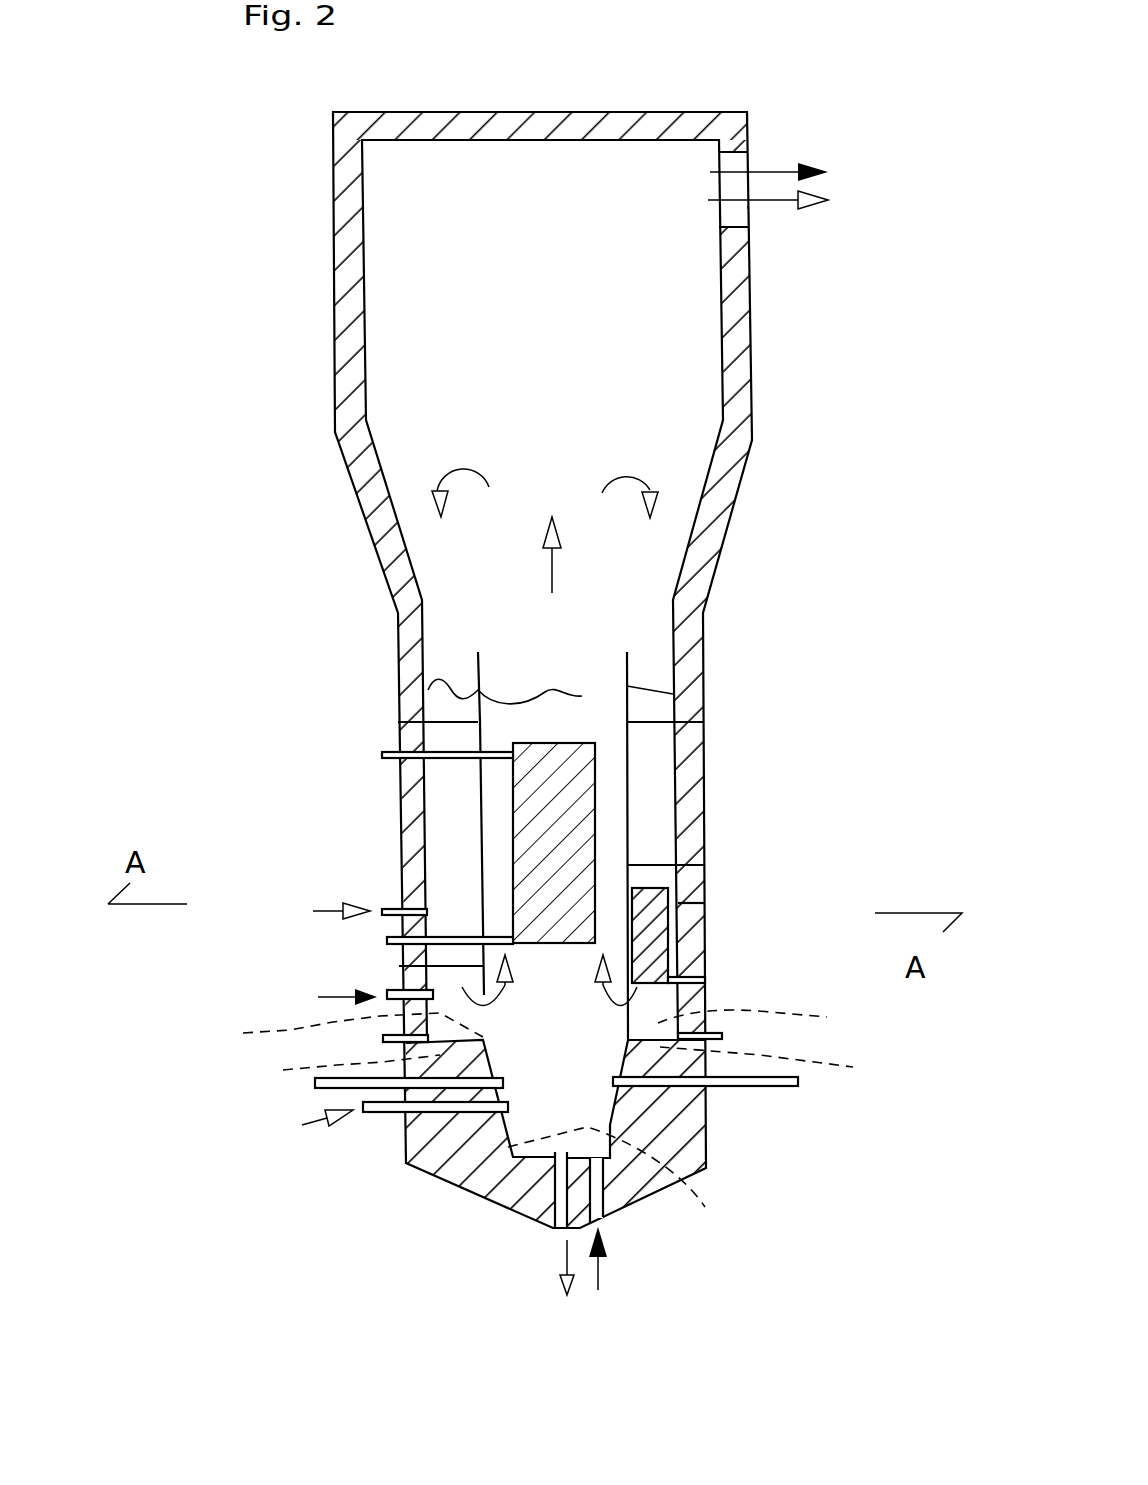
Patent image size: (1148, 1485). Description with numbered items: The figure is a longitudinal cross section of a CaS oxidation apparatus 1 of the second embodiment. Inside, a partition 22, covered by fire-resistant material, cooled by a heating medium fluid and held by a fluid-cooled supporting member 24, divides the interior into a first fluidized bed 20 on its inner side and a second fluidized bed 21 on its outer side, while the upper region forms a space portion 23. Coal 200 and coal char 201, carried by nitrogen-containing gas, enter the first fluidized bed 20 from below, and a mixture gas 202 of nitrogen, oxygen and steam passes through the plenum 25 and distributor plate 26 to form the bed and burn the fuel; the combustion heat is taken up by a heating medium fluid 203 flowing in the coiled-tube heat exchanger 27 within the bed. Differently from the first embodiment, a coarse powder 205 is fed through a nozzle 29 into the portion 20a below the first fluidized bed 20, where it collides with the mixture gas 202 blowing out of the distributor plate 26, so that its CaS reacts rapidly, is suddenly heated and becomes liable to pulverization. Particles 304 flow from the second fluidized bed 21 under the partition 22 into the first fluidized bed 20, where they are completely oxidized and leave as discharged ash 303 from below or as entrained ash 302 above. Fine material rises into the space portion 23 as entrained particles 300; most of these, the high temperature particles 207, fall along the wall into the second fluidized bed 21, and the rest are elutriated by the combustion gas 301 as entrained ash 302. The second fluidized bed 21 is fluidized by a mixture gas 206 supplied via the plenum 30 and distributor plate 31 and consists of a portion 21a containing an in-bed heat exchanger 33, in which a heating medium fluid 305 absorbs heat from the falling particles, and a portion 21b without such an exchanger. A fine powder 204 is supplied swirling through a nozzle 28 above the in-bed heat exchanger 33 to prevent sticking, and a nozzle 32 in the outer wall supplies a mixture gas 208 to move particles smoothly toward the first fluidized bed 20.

The CaS oxidation apparatus 1 is at (333, 168).
The space portion 23 is at (393, 268).
The first fluidized bed 20 is at (552, 710).
The portion below the first fluidized bed 20a is at (556, 1099).
The second fluidized bed 21 is at (440, 677).
The portion of the second fluidized bed having the in-bed heat exchanger 21a is at (658, 875).
The portion of the second fluidized bed without heat exchanger 21b is at (445, 798).
The partition 22 is at (480, 823).
The supporting member 24 is at (703, 688).
The plenum 25 is at (487, 1167).
The distributor plate 26 is at (614, 1187).
The heat exchanger 27 is at (577, 817).
The nozzle 28 is at (393, 905).
The nozzle 29 is at (380, 1113).
The plenum 30 is at (565, 1062).
The distributor plate 31 is at (534, 1025).
The nozzle 32 is at (393, 988).
The in-bed heat exchanger 33 is at (655, 938).
The coal 200 is at (278, 1091).
The coal char 201 is at (838, 1082).
The mixture gas 202 is at (619, 1234).
The heating medium fluid 203 is at (367, 762).
The fine powder 204 is at (311, 913).
The coarse powder 205 is at (295, 1133).
The mixture gas 206 is at (366, 1042).
The high temperature particles 207 is at (545, 468).
The mixture gas 208 is at (315, 1001).
The entrained particles 300 is at (586, 568).
The combustion gas 301 is at (798, 175).
The entrained ash 302 is at (799, 212).
The discharged ash 303 is at (547, 1289).
The particles 304 is at (549, 999).
The heating medium fluid 305 is at (748, 903).